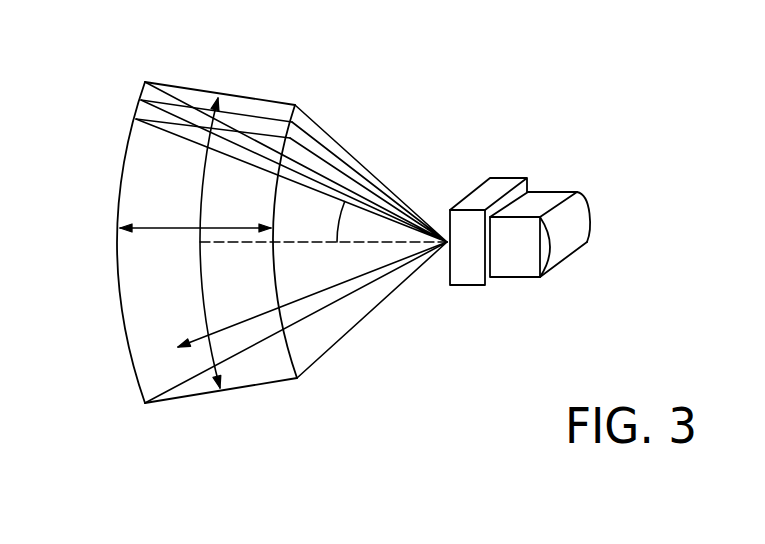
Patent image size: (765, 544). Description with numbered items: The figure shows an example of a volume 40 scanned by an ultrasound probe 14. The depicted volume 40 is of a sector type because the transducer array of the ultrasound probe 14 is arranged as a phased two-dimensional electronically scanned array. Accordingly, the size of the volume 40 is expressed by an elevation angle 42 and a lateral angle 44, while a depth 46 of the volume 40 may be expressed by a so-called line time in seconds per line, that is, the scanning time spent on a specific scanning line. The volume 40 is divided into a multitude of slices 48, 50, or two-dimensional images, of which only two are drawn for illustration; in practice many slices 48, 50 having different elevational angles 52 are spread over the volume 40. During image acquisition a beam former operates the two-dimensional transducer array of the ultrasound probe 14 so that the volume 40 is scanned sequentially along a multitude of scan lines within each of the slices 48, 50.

The ultrasound probe 14 is at (550, 195).
The volume 40 is at (260, 367).
The elevation angle 42 is at (203, 175).
The lateral angle 44 is at (160, 231).
The depth 46 is at (197, 337).
The slice 48 is at (295, 103).
The slice 50 is at (255, 133).
The elevational angle 52 is at (340, 234).